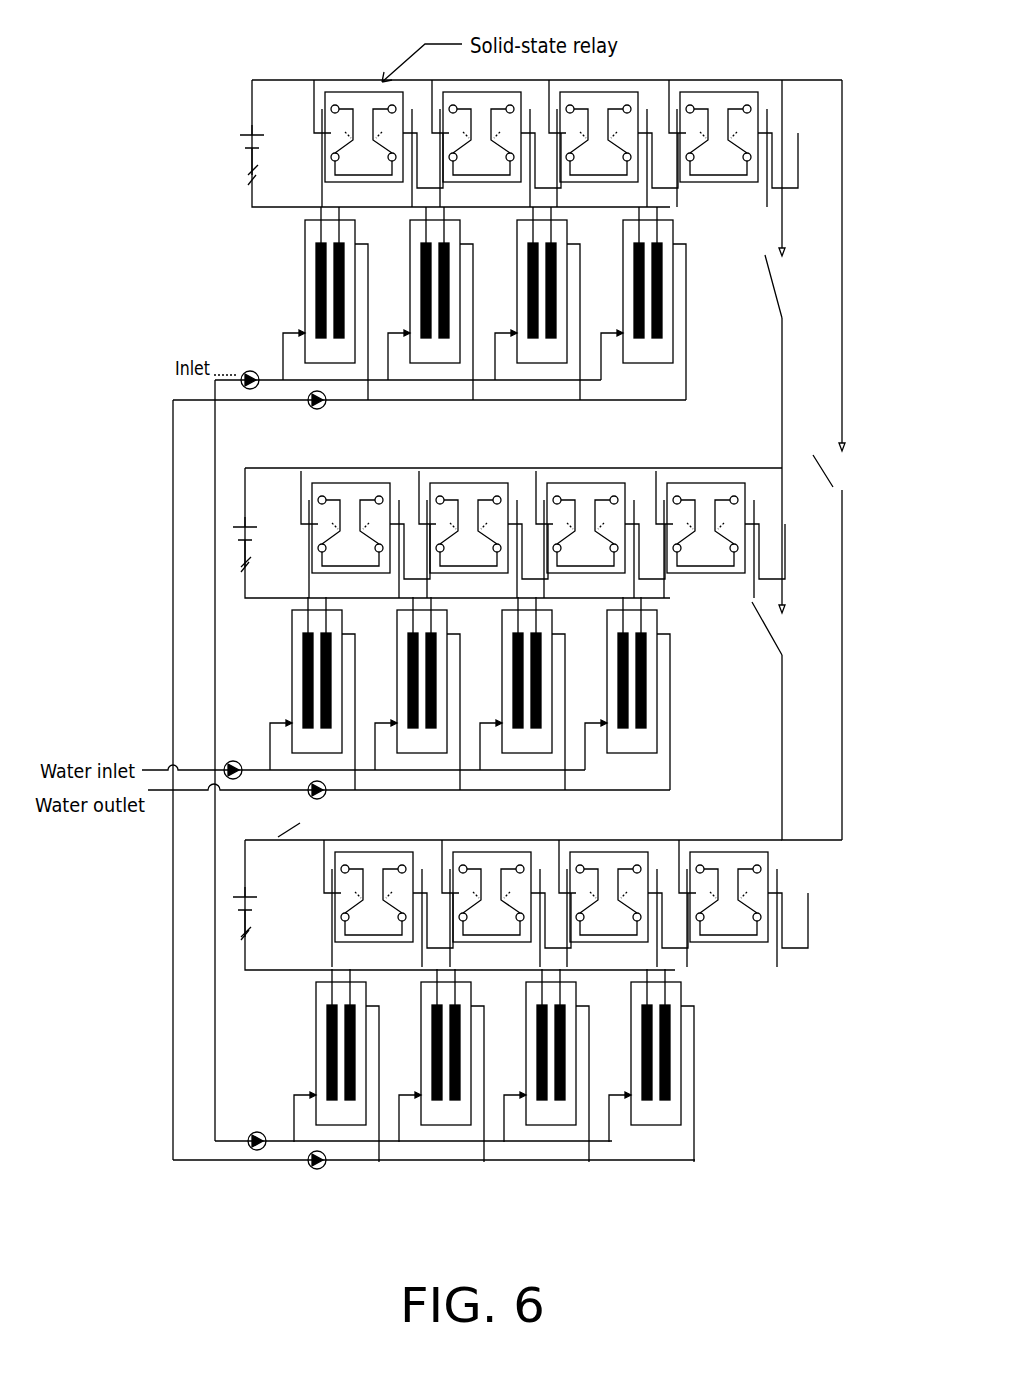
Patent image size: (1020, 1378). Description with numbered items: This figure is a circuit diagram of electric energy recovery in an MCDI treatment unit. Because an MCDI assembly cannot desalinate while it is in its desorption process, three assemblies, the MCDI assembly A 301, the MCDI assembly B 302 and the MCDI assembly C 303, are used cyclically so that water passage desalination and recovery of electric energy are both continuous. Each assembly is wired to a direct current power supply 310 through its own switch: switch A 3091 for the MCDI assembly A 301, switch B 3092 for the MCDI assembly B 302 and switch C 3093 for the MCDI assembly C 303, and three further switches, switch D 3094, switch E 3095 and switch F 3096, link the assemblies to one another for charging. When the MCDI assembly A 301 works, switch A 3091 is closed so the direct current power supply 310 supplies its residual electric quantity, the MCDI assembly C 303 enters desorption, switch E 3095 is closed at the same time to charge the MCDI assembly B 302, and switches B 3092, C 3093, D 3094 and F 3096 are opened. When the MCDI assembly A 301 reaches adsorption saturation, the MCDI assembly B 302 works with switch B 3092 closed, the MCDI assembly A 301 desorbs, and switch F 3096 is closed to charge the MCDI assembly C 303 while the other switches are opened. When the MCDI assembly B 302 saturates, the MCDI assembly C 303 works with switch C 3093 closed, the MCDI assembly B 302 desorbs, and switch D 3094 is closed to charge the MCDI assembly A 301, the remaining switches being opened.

The MCDI assembly A 301 is at (690, 340).
The MCDI assembly B 302 is at (700, 725).
The MCDI assembly C 303 is at (705, 1058).
The direct current power supply 310 is at (245, 148).
The switch A 3091 is at (253, 188).
The switch B 3092 is at (240, 572).
The switch C 3093 is at (245, 938).
The switch D 3094 is at (778, 278).
The switch E 3095 is at (778, 628).
The switch F 3096 is at (832, 478).